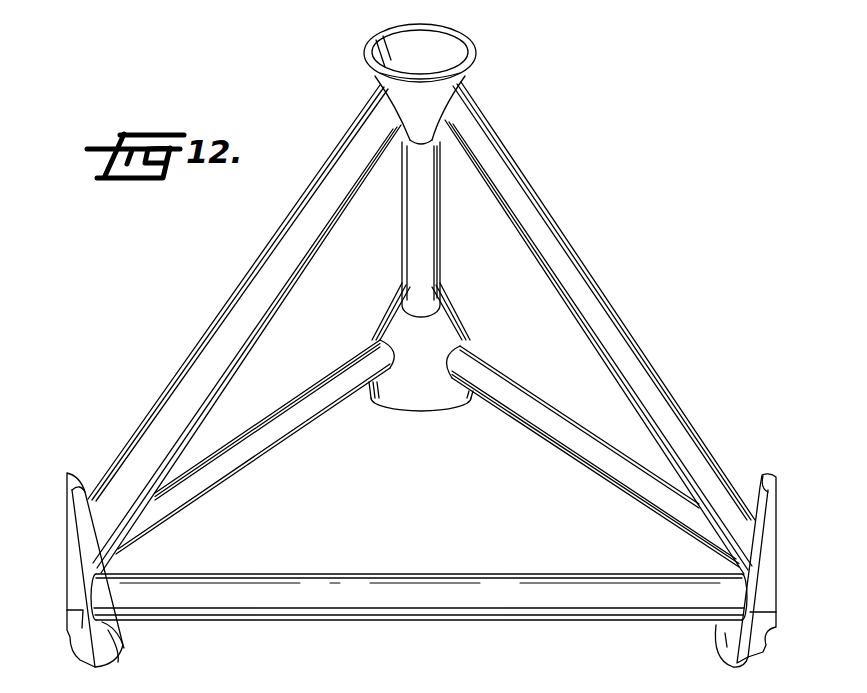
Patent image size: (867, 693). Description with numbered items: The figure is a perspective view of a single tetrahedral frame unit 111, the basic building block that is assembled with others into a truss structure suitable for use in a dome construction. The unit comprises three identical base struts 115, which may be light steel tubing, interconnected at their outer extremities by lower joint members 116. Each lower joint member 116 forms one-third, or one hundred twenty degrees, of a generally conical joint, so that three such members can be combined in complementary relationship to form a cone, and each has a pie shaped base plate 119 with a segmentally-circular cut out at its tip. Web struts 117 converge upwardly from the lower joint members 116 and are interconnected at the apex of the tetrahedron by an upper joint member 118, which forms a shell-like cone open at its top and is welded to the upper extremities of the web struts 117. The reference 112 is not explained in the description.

The tetrahedral frame unit 111 is at (548, 150).
The base frame assembly 112 is at (415, 692).
The base struts 115 is at (262, 455).
The lower joint member 116 is at (420, 403).
The web struts 117 is at (257, 257).
The upper joint member 118 is at (372, 54).
The base plate 119 is at (80, 652).